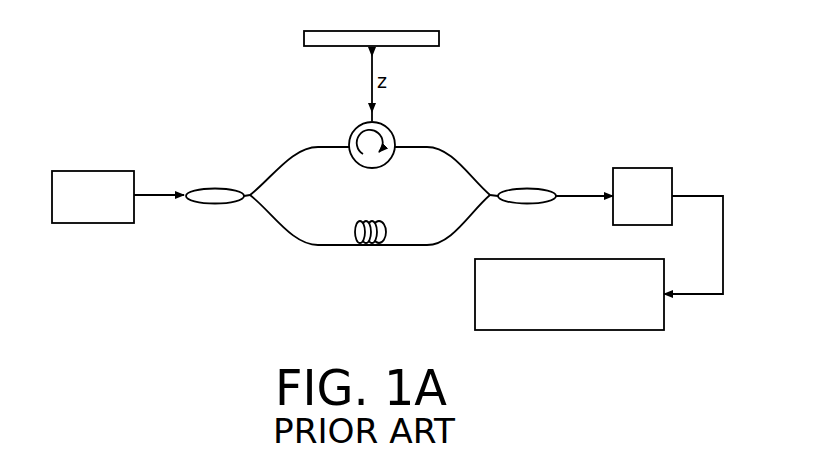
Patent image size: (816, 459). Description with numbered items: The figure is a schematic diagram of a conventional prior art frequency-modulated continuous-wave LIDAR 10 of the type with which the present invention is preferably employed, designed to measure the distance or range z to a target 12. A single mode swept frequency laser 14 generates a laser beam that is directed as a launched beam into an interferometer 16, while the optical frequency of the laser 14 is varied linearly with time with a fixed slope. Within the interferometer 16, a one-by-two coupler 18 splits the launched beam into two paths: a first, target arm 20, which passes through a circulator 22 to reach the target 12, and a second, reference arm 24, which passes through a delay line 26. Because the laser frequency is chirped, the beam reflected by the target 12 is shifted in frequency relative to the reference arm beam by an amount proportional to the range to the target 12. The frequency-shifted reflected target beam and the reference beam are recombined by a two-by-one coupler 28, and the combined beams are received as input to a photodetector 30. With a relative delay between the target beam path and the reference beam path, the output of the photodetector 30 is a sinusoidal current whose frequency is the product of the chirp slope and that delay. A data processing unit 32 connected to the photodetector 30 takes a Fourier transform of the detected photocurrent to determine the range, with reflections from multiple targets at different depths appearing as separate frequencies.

The FMCW LIDAR 10 is at (65, 92).
The target 12 is at (442, 37).
The single mode swept frequency laser 14 is at (95, 223).
The interferometer 16 is at (234, 260).
The 1×2 coupler 18 is at (213, 204).
The target arm 20 is at (281, 164).
The circulator 22 is at (352, 132).
The reference arm 24 is at (307, 245).
The delay line 26 is at (388, 230).
The 2×1 coupler 28 is at (528, 204).
The photodetector 30 is at (642, 168).
The data processing unit 32 is at (568, 330).